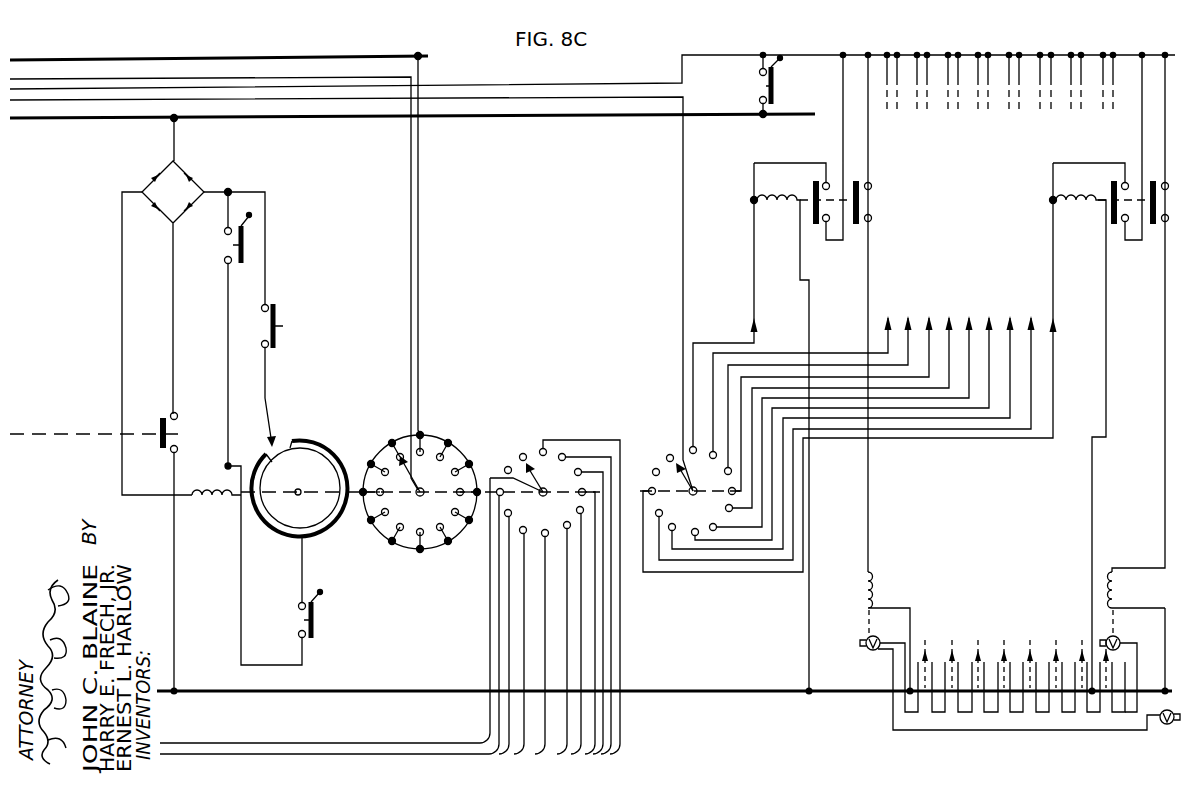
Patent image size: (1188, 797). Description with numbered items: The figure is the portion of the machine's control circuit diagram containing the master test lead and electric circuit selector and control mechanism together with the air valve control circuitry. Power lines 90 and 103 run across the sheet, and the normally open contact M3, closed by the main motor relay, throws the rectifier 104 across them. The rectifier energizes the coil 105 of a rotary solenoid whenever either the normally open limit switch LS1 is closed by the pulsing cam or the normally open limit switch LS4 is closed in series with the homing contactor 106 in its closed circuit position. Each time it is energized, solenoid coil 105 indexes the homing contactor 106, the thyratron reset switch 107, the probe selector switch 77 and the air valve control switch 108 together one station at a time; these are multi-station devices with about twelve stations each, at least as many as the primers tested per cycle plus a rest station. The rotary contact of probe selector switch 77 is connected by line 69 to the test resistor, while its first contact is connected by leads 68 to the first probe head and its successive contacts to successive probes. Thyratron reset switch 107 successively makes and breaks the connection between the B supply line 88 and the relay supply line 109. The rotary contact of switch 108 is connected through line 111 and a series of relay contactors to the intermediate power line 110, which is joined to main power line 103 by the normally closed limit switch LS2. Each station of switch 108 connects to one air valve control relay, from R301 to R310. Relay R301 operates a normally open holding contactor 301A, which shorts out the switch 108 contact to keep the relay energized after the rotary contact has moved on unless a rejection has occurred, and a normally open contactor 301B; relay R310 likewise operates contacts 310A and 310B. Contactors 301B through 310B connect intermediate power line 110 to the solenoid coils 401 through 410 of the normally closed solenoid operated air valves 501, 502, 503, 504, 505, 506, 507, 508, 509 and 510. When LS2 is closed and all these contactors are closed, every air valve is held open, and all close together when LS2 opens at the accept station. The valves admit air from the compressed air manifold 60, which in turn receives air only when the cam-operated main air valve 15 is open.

The B supply line 88 is at (273, 56).
The intermediate power line 110 is at (48, 89).
The relay supply line 109 is at (262, 79).
The power line 103 is at (275, 114).
The rectifier 104 is at (172, 182).
The limit switch LS1 is at (263, 428).
The contact M3 is at (98, 541).
The rotary solenoid coil 105 is at (213, 507).
The homing contactor 106 is at (301, 420).
The thyratron reset switch 107 is at (420, 492).
The probe selector switch 77 is at (542, 493).
The air valve control switch 108 is at (848, 387).
The line 111 is at (683, 200).
The limit switch LS2 is at (790, 86).
The contactor 301A is at (824, 163).
The air valve control relay R301 is at (780, 427).
The contactor 301B is at (866, 200).
The contactor 310A is at (1122, 163).
The air valve control relay R310 is at (1078, 427).
The contactor 310B is at (1160, 226).
The solenoid coil 401 is at (866, 594).
The solenoid coil 410 is at (1116, 606).
The solenoid operated air valve 501 is at (868, 637).
The solenoid operated air valve 502 is at (925, 648).
The solenoid operated air valve 503 is at (952, 648).
The solenoid operated air valve 504 is at (978, 648).
The solenoid operated air valve 505 is at (1004, 648).
The solenoid operated air valve 506 is at (1030, 648).
The solenoid operated air valve 507 is at (1056, 648).
The solenoid operated air valve 508 is at (1082, 648).
The solenoid operated air valve 509 is at (1102, 632).
The solenoid operated air valve 510 is at (1113, 636).
The compressed air manifold 60 is at (1020, 730).
The main air valve 15 is at (1165, 726).
The power line 90 is at (338, 691).
The line 69 is at (490, 622).
The leads 68 is at (350, 754).
The limit switch LS4 is at (326, 587).